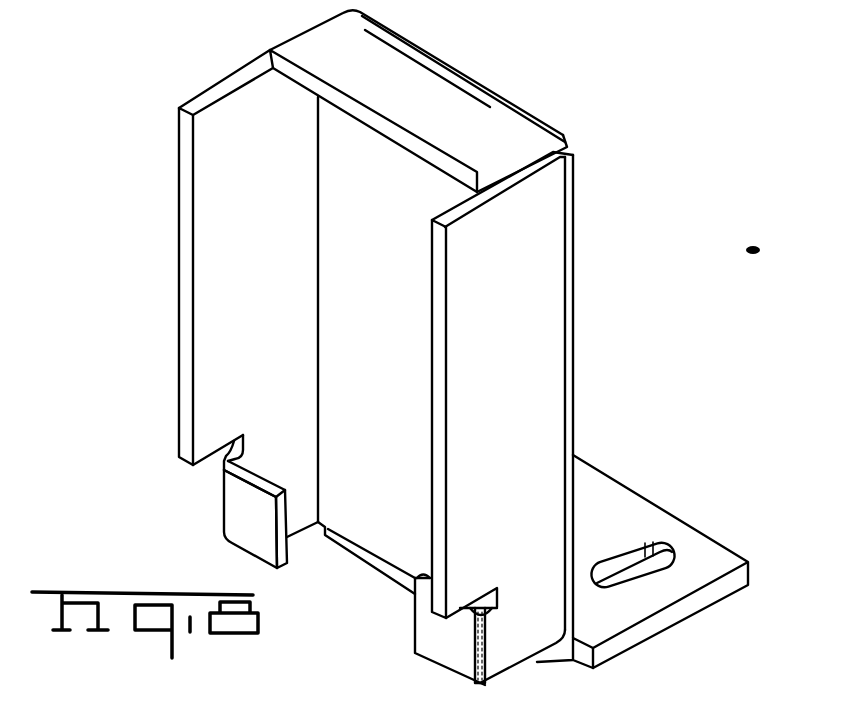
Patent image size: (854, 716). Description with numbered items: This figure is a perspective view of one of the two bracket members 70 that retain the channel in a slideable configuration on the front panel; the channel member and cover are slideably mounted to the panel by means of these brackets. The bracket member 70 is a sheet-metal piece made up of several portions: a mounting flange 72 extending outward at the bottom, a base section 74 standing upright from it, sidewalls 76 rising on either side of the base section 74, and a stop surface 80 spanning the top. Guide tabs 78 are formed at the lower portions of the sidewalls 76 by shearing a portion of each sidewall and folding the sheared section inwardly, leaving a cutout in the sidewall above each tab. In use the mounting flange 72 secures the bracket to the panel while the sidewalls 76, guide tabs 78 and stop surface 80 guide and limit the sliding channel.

The bracket member 70 is at (612, 318).
The mounting flange 72 is at (613, 495).
The base section 74 is at (387, 300).
The sidewalls 76 is at (277, 227).
The guide tabs 78 is at (247, 527).
The stop surface 80 is at (450, 88).